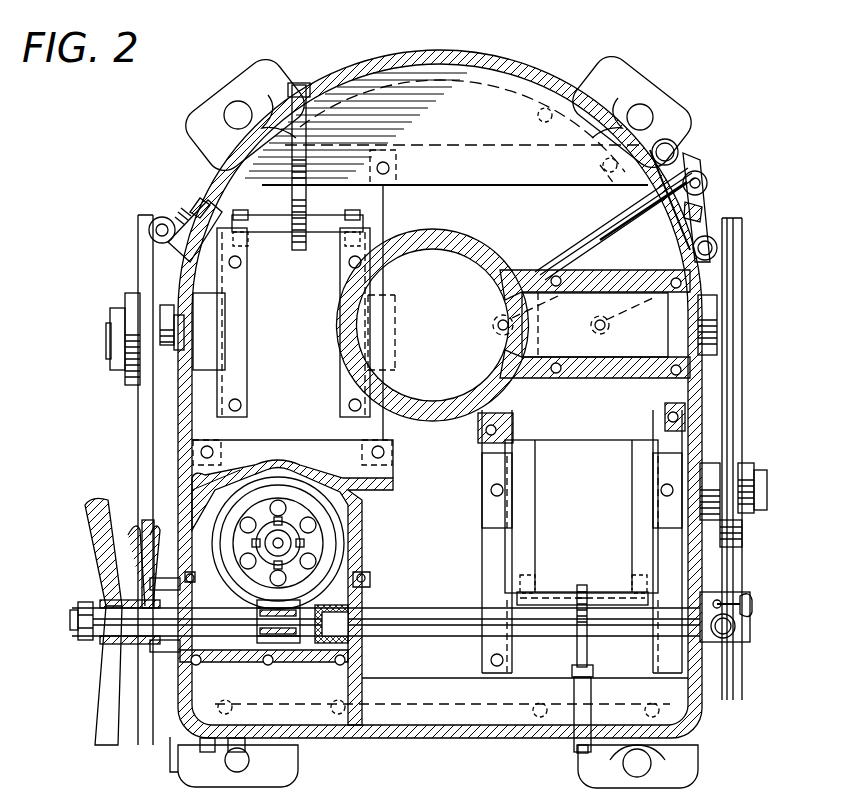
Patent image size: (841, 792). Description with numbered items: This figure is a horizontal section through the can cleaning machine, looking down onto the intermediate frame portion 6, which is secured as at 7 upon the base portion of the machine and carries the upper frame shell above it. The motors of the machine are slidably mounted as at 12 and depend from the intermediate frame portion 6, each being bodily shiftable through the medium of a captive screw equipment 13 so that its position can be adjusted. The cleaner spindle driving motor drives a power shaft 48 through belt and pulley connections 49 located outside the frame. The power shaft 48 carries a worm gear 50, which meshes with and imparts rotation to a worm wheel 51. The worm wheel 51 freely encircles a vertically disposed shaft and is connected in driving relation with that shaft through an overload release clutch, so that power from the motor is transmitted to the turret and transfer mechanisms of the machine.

The intermediate frame portion 6 is at (548, 735).
The securing points 7 is at (600, 160).
The slidable motor mounting 12 is at (234, 380).
The captive screw equipment 13 is at (300, 212).
The power shaft 48 is at (248, 630).
The belt and pulley connections 49 is at (140, 545).
The worm gear 50 is at (290, 605).
The worm wheel 51 is at (340, 525).